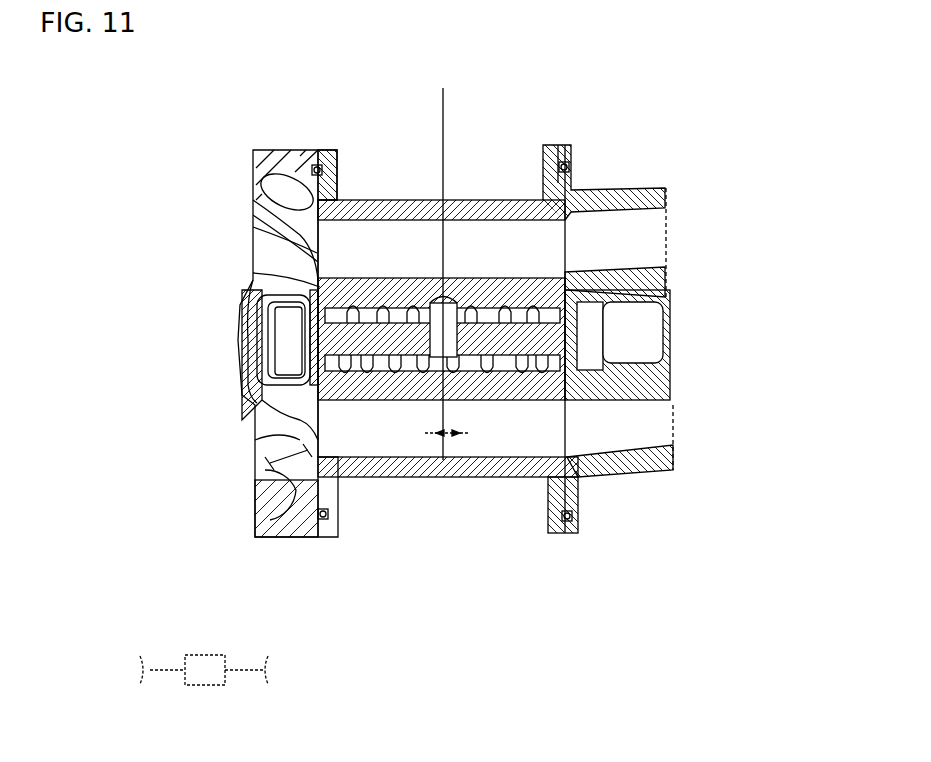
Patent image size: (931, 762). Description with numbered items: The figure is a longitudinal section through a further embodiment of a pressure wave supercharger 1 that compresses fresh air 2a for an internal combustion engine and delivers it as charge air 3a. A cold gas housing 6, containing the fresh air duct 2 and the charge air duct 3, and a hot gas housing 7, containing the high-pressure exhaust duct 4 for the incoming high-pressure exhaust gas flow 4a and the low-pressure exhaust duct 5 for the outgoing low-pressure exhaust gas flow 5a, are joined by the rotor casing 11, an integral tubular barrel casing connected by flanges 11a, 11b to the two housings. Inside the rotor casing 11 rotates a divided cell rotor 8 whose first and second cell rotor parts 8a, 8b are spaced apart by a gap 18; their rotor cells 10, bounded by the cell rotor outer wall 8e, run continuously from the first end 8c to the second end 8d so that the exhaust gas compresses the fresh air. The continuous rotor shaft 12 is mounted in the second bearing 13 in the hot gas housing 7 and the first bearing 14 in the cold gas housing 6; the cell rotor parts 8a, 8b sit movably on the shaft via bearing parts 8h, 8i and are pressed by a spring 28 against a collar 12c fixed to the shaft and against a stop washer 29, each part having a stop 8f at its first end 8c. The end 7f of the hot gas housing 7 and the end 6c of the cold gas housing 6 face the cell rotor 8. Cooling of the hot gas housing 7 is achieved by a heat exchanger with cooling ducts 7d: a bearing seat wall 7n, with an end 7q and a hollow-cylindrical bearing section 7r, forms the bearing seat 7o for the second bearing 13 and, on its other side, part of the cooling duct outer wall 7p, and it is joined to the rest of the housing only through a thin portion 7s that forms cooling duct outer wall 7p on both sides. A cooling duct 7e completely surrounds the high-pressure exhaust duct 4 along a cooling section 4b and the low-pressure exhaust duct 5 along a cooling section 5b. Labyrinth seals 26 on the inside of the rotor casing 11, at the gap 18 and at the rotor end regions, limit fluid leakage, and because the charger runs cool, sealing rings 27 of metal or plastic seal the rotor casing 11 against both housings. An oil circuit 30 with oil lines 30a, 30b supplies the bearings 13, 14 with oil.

The pressure wave supercharger 1 is at (655, 137).
The fresh air duct 2 is at (655, 432).
The fresh air 2a is at (690, 412).
The charge air duct 3 is at (640, 218).
The charge air 3a is at (643, 231).
The high-pressure exhaust duct 4 is at (258, 246).
The high-pressure exhaust gas flow 4a is at (250, 214).
The cooling section 4b is at (262, 205).
The low-pressure exhaust duct 5 is at (300, 482).
The low-pressure exhaust gas flow 5a is at (275, 443).
The cooling section 5b is at (290, 470).
The cold gas housing 6 is at (640, 462).
The end of cold gas housing 6c is at (567, 382).
The hot gas housing 7 is at (300, 520).
The cooling ducts 7d is at (190, 531).
The cooling duct 7e is at (282, 280).
The end of hot gas housing 7f is at (325, 245).
The bearing seat wall 7n is at (177, 368).
The bearing seat 7o is at (310, 340).
The cooling duct outer wall 7p is at (256, 196).
The end of bearing seat wall 7q is at (312, 347).
The bearing section 7r is at (315, 388).
The thin portion 7s is at (342, 378).
The cell rotor 8 is at (447, 205).
The first cell rotor part 8a is at (489, 205).
The second cell rotor part 8b is at (405, 228).
The first end of cell rotor 8c is at (284, 240).
The second end of cell rotor 8d is at (545, 288).
The cell rotor outer wall 8e is at (417, 378).
The stop 8f is at (400, 380).
The bearing part 8h is at (447, 463).
The bearing part 8i is at (535, 478).
The rotor cells 10 is at (467, 205).
The rotor casing 11 is at (538, 205).
The flange 11a is at (325, 150).
The flange 11b is at (551, 145).
The rotor shaft 12 is at (653, 350).
The collar 12c is at (372, 378).
The second bearing 13 is at (292, 292).
The first bearing 14 is at (598, 343).
The gap 18 is at (505, 478).
The labyrinth seals 26 is at (580, 477).
The sealing rings 27 is at (322, 168).
The spring 28 is at (540, 272).
The stop washer 29 is at (572, 332).
The oil circuit 30 is at (204, 670).
The oil lines 30a is at (247, 672).
The controller input line 30b is at (166, 670).